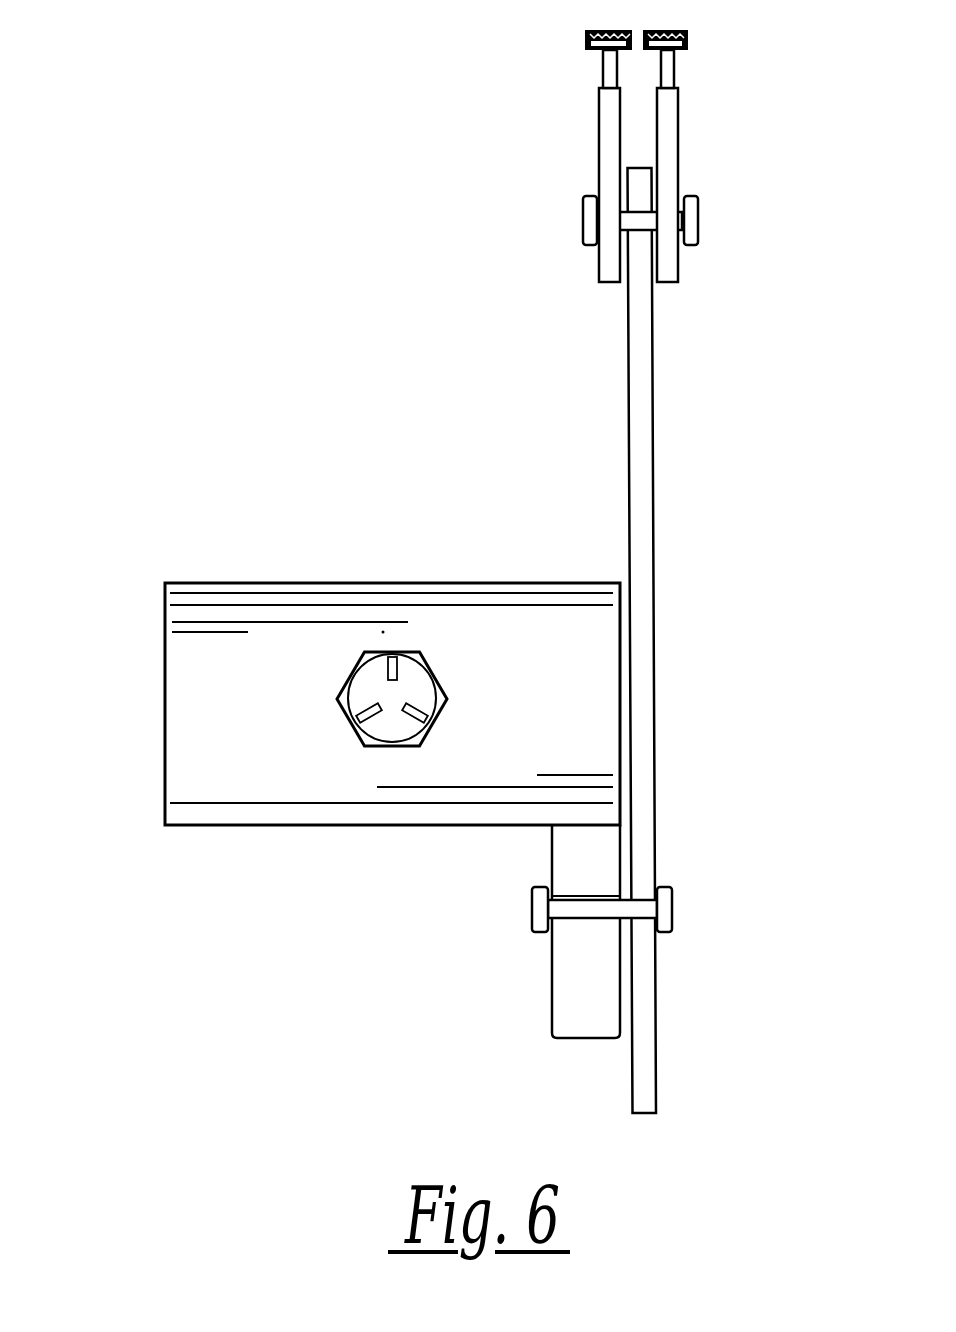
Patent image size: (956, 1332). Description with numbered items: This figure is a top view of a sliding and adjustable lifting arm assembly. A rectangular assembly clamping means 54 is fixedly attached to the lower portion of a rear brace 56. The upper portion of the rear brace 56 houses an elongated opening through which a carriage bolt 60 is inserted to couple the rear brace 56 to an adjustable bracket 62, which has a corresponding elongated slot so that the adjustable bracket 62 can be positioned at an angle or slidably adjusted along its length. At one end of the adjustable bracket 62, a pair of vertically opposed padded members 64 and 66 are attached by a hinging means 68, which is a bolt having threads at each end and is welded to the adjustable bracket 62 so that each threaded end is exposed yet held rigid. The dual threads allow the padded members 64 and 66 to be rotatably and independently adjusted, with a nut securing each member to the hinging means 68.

The rectangular assembly clamping means 54 is at (180, 625).
The rear brace 56 is at (567, 855).
The carriage bolt 60 is at (532, 915).
The adjustable bracket 62 is at (645, 823).
The padded member 64 is at (689, 38).
The padded member 66 is at (585, 38).
The hinging means 68 is at (582, 222).